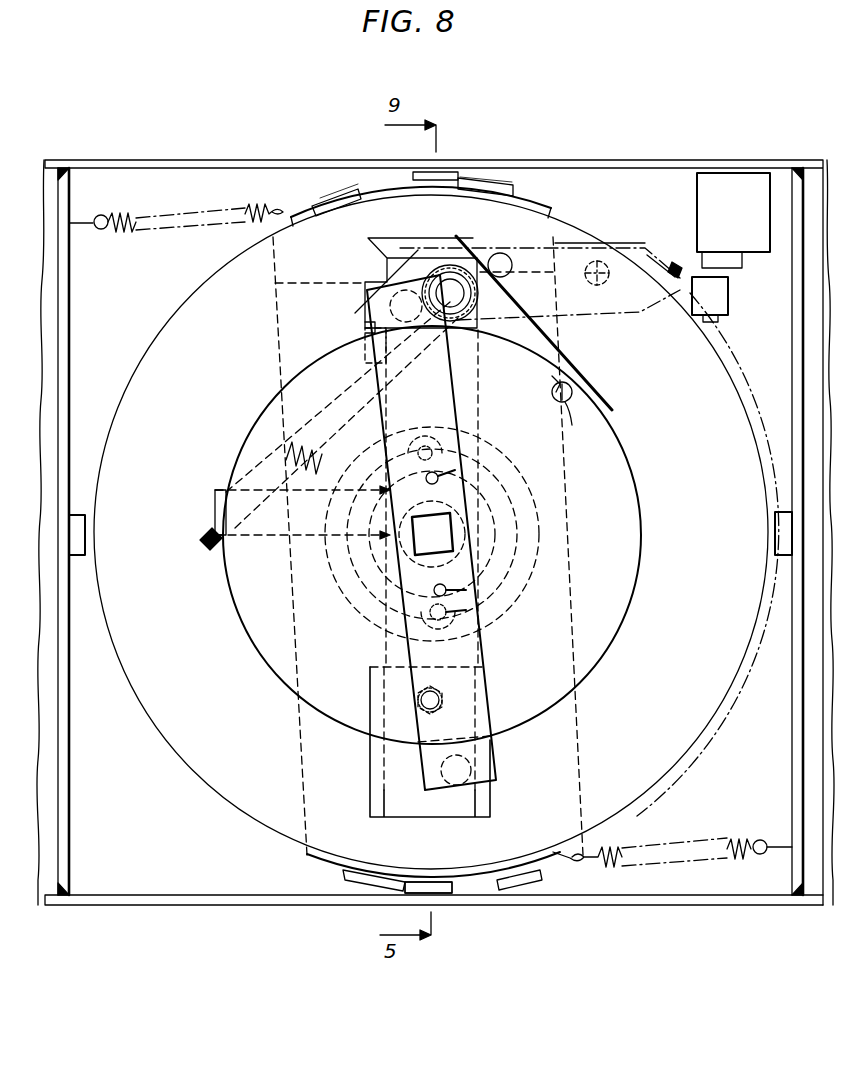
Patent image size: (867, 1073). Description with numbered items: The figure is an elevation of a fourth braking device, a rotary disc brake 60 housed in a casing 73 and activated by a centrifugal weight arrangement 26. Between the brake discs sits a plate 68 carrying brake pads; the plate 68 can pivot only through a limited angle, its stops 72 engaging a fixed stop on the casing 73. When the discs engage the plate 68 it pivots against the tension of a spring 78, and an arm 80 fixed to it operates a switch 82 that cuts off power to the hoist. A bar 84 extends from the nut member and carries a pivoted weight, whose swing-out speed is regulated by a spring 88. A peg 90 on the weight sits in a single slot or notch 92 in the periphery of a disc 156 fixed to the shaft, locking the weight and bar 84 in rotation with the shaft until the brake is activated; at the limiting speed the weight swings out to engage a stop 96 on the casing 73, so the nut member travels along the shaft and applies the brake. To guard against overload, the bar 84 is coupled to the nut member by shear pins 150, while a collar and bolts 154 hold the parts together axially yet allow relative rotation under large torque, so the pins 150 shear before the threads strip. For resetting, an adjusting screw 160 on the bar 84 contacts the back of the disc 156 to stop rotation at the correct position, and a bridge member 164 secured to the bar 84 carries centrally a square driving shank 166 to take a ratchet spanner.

The centrifugal weight arrangement 26 is at (540, 236).
The rotary disc brake 60 is at (176, 338).
The plate 68 is at (330, 862).
The stops 72 is at (340, 188).
The casing 73 is at (588, 163).
The spring 78 is at (605, 866).
The arm 80 is at (678, 268).
The switch 82 is at (708, 302).
The bar 84 is at (400, 766).
The spring 88 is at (250, 432).
The peg 90 is at (575, 396).
The slot or notch 92 is at (570, 410).
The stop 96 is at (88, 526).
The shear pins 150 is at (494, 450).
The bolts 154 is at (427, 440).
The disc 156 is at (625, 462).
The adjusting screw 160 is at (458, 698).
The bridge member 164 is at (445, 656).
The square driving shank 166 is at (420, 538).